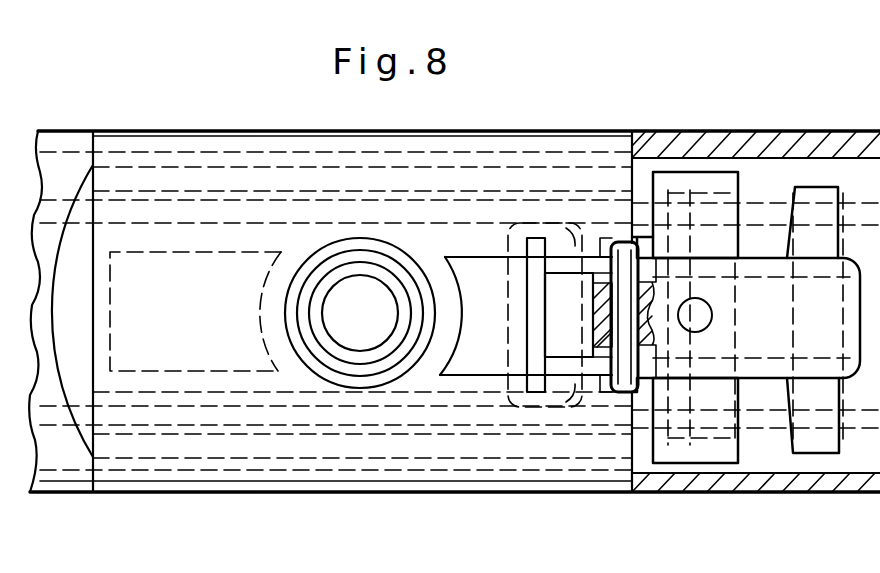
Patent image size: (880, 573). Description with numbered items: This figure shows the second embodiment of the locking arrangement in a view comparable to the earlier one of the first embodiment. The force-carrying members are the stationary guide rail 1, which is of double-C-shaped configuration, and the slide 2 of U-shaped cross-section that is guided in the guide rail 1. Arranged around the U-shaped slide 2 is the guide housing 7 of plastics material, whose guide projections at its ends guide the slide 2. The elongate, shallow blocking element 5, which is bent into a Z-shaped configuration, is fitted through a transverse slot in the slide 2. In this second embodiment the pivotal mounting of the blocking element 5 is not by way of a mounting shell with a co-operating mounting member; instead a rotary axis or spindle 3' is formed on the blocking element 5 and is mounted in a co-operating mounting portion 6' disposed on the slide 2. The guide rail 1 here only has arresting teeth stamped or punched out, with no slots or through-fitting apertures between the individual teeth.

The stationary guide rail 1 is at (55, 165).
The slide 2 is at (75, 248).
The guide housing 7 is at (228, 257).
The blocking element 5 is at (556, 263).
The rotary axis or spindle 3' is at (623, 390).
The co-operating mounting portion 6' is at (746, 278).